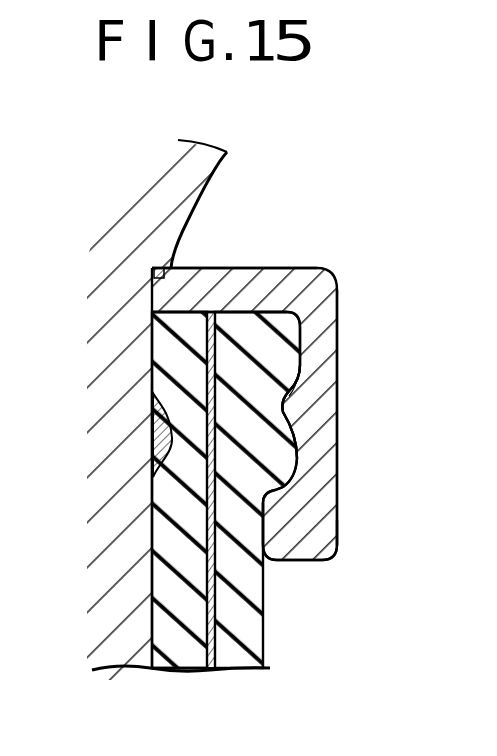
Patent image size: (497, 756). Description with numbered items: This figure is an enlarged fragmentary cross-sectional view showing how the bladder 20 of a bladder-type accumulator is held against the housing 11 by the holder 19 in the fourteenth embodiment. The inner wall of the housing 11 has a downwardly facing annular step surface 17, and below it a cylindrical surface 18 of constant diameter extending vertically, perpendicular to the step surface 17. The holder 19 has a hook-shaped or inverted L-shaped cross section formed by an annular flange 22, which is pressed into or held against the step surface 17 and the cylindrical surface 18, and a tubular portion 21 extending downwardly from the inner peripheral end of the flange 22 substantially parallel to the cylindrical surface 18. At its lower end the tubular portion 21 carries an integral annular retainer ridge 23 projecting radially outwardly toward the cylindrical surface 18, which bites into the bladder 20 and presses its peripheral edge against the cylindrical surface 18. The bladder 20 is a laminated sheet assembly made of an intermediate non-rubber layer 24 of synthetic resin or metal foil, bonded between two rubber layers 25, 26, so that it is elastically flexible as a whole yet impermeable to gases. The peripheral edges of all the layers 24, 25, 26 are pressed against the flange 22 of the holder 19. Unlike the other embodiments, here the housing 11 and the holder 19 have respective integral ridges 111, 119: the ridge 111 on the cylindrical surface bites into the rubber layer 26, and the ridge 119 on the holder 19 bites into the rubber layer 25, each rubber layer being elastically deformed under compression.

The housing 11 is at (165, 183).
The annular step surface 17 is at (153, 277).
The cylindrical surface 18 is at (152, 517).
The holder 19 is at (340, 290).
The bladder 20 is at (155, 582).
The tubular portion 21 is at (328, 372).
The annular flange 22 is at (234, 272).
The annular retainer ridge 23 is at (305, 552).
The intermediate non-rubber layer 24 is at (215, 655).
The rubber layer 25 is at (252, 655).
The rubber layer 26 is at (182, 650).
The ridge 111 is at (150, 437).
The ridge 119 is at (290, 400).